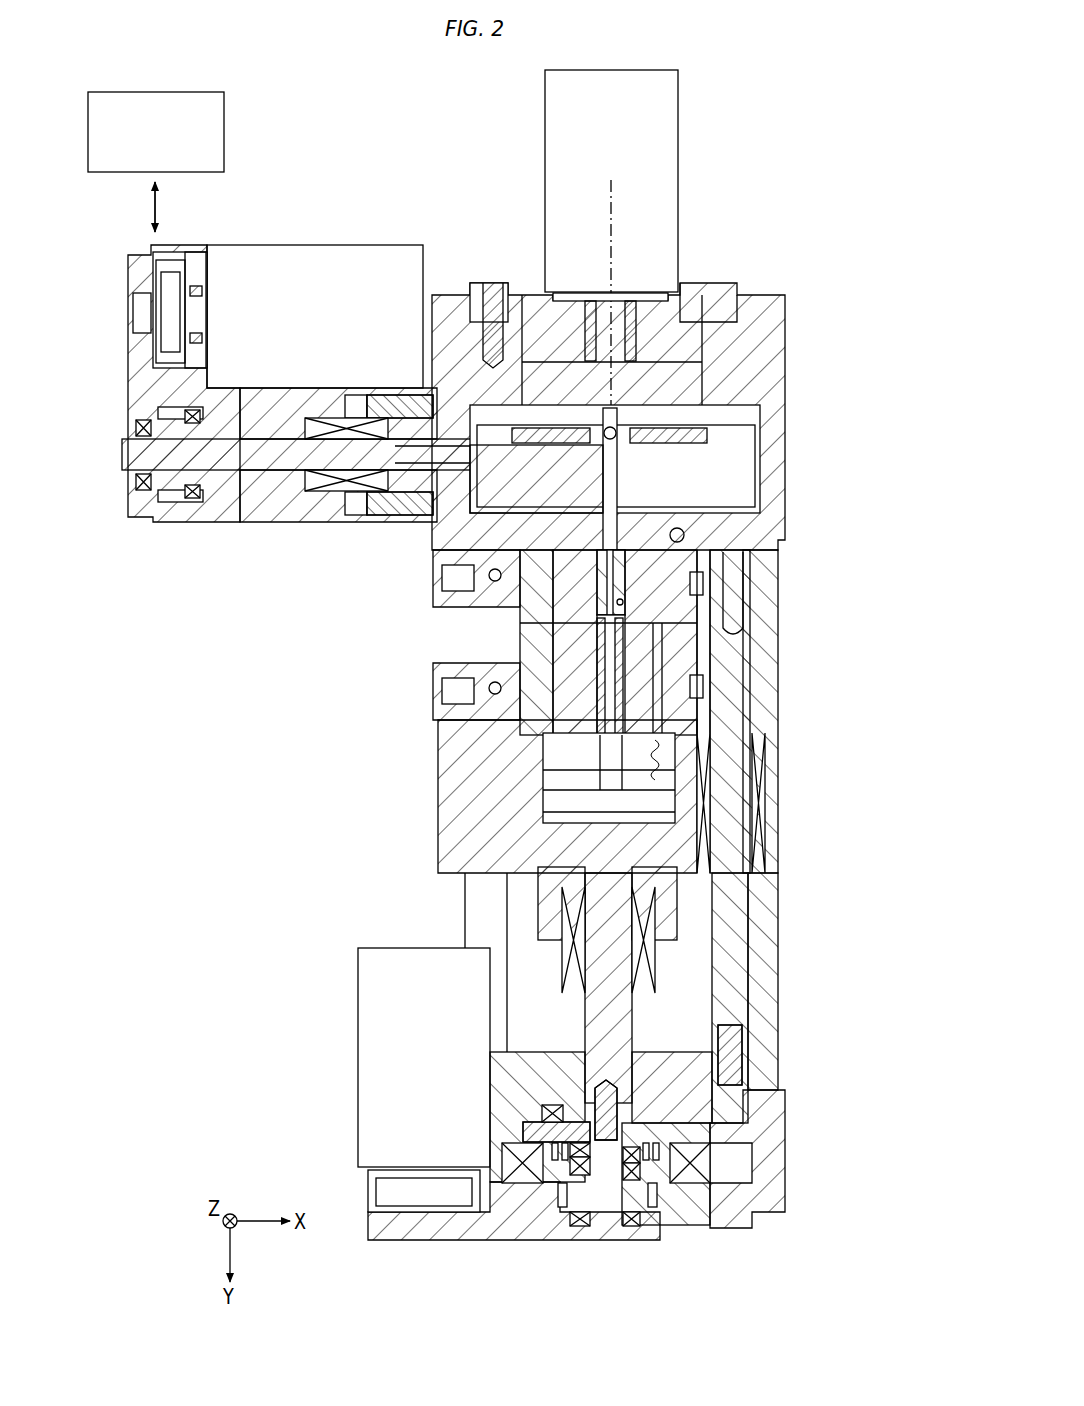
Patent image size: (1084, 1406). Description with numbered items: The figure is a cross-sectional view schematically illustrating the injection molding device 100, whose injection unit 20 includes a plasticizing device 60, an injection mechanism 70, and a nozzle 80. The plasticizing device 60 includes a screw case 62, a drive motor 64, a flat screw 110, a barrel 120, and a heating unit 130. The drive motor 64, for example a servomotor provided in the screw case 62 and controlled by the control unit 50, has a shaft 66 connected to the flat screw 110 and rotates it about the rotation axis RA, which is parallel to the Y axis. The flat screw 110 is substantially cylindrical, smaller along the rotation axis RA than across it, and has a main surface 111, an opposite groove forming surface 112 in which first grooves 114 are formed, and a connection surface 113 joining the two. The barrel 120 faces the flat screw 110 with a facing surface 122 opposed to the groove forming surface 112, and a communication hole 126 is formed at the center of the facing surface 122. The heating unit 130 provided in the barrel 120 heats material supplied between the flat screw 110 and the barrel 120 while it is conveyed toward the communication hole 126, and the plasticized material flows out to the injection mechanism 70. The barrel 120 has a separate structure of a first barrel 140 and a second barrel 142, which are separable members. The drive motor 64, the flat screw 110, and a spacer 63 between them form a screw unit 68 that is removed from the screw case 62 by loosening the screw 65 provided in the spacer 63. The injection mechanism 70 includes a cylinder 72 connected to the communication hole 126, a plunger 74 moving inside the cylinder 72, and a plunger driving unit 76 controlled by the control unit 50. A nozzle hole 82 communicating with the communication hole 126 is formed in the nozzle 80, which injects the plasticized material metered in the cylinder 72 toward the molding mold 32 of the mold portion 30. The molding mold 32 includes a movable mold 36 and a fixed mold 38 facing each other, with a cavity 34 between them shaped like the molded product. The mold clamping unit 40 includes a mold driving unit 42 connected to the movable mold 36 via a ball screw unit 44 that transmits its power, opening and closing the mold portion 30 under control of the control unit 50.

The injection molding device 100 is at (782, 140).
The injection unit 20 is at (835, 248).
The mold portion 30 is at (586, 711).
The molding mold 32 is at (430, 635).
The cavity 34 is at (720, 655).
The movable mold 36 is at (515, 635).
The fixed mold 38 is at (515, 605).
The mold clamping unit 40 is at (576, 1053).
The mold driving unit 42 is at (395, 1040).
The ball screw unit 44 is at (610, 1010).
The control unit 50 is at (196, 135).
The plasticizing device 60 is at (637, 387).
The screw case 62 is at (760, 342).
The spacer 63 is at (700, 330).
The drive motor 64 is at (570, 147).
The screw 65 is at (490, 310).
The shaft 66 is at (617, 317).
The screw unit 68 is at (688, 163).
The injection mechanism 70 is at (248, 540).
The cylinder 72 is at (411, 522).
The plunger 74 is at (283, 455).
The plunger driving unit 76 is at (318, 282).
The nozzle 80 is at (733, 600).
The nozzle hole 82 is at (660, 575).
The flat screw 110 is at (670, 388).
The main surface 111 is at (740, 318).
The groove forming surface 112 is at (700, 414).
The connection surface 113 is at (508, 385).
The first grooves 114 is at (470, 530).
The barrel 120 is at (714, 474).
The facing surface 122 is at (645, 405).
The communication hole 126 is at (690, 535).
The heating unit 130 is at (707, 437).
The first barrel 140 is at (652, 467).
The second barrel 142 is at (705, 450).
The rotation axis RA is at (606, 228).